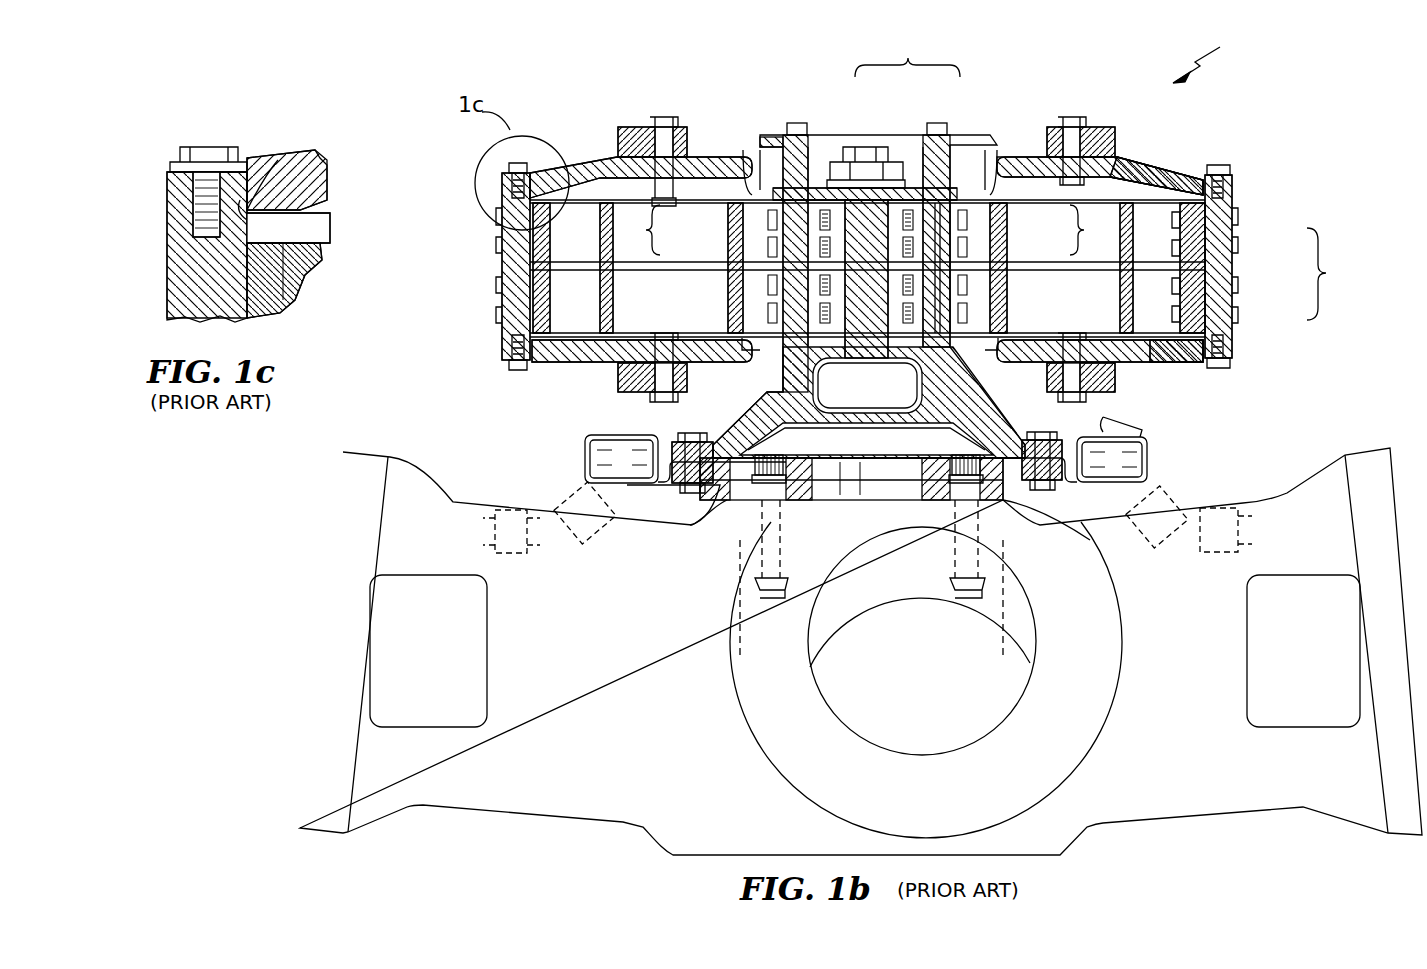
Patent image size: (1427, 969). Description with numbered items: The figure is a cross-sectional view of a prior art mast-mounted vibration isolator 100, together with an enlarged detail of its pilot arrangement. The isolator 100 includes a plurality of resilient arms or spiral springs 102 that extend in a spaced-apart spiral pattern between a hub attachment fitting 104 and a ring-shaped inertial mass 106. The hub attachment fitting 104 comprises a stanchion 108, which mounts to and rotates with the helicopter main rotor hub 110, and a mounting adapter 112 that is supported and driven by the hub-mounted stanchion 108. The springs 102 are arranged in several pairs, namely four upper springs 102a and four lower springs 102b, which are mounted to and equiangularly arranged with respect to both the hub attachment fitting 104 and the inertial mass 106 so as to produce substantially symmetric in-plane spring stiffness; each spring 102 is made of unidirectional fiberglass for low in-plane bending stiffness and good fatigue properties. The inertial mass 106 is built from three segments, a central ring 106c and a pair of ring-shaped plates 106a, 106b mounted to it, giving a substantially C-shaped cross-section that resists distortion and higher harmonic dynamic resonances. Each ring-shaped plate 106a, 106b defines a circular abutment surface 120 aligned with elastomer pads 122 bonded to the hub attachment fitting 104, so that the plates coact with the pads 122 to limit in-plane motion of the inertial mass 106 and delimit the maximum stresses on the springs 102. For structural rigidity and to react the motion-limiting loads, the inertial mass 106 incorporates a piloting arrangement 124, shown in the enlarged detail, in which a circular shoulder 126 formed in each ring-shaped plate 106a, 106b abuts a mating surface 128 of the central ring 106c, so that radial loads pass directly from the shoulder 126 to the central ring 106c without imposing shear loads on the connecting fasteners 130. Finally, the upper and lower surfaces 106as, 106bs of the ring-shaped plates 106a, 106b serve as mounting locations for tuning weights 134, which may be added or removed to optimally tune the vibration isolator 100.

In FIG. 1b, the mast-mounted vibration isolator 100 is at (1218, 56).
In FIG. 1b, the resilient arms (spiral springs) 102 is at (867, 268).
In FIG. 1b, the upper springs 102a is at (734, 212).
In FIG. 1b, the lower springs 102b is at (740, 290).
In FIG. 1b, the hub attachment fitting 104 is at (907, 56).
In FIG. 1b, the inertial mass 106 is at (1338, 274).
In FIG. 1c, the ring-shaped plate (upper) 106a is at (305, 172).
In FIG. 1b, the ring-shaped plate (upper) 106a is at (592, 165).
In FIG. 1b, the upper surface of ring-shaped plate 106as is at (1162, 137).
In FIG. 1b, the ring-shaped plate (lower) 106b is at (582, 356).
In FIG. 1b, the lower surface of ring-shaped plate 106bs is at (1161, 383).
In FIG. 1c, the central ring 106c is at (185, 276).
In FIG. 1b, the central ring 106c is at (512, 298).
In FIG. 1b, the stanchion 108 is at (882, 188).
In FIG. 1b, the helicopter main rotor hub 110 is at (1167, 550).
In FIG. 1b, the mounting adapter 112 is at (945, 147).
In FIG. 1b, the circular abutment surface 120 is at (745, 190).
In FIG. 1b, the elastomer pads 122 is at (770, 147).
In FIG. 1b, the piloting arrangement 124 is at (1192, 180).
In FIG. 1c, the circular shoulder 126 is at (262, 175).
In FIG. 1c, the mating surface 128 is at (305, 228).
In FIG. 1c, the connecting fasteners 130 is at (182, 150).
In FIG. 1b, the tuning weights 134 is at (632, 127).